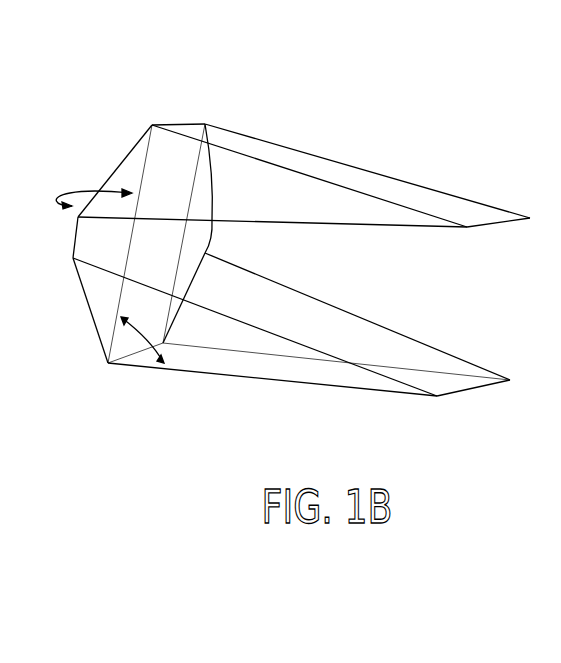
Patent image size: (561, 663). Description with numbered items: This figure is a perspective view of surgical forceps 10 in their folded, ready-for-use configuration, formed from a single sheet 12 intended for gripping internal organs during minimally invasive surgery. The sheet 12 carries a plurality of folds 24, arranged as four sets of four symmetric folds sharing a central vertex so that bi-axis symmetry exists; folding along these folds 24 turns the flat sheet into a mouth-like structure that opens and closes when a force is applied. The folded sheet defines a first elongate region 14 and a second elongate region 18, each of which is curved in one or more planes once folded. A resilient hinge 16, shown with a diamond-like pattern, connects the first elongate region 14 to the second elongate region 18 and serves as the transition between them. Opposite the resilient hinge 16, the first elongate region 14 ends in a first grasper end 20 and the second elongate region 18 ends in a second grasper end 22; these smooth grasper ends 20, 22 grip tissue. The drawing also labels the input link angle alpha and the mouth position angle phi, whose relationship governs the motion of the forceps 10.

The surgical forceps 10 is at (293, 243).
The sheet 12 is at (200, 346).
The first elongate region 14 is at (243, 133).
The resilient hinge 16 is at (112, 252).
The second elongate region 18 is at (332, 387).
The first grasper end 20 is at (487, 223).
The second grasper end 22 is at (455, 372).
The folds 24 is at (122, 160).